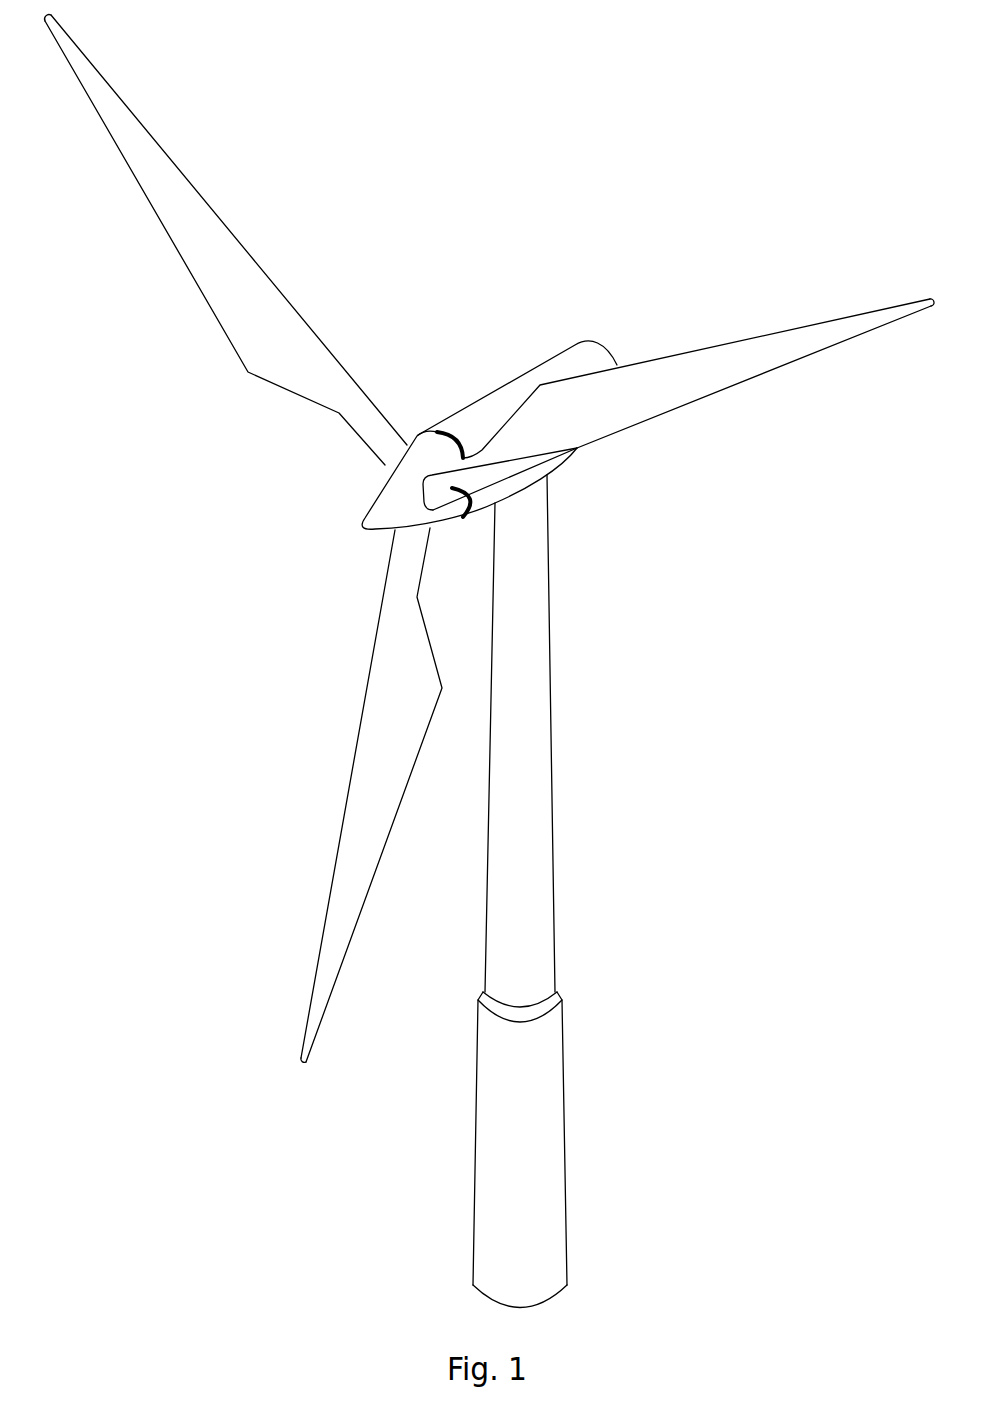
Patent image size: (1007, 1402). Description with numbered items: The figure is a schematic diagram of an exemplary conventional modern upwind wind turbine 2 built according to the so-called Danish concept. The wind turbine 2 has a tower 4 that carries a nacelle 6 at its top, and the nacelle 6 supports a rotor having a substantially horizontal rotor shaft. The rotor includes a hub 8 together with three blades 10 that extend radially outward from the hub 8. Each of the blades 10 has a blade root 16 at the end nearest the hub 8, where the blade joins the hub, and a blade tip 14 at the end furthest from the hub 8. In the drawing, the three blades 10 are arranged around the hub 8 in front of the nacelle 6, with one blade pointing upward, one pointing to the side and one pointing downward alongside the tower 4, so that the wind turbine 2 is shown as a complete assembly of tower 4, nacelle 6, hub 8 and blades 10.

The wind turbine 2 is at (678, 813).
The tower 4 is at (538, 737).
The nacelle 6 is at (483, 410).
The hub 8 is at (380, 503).
The blades 10 is at (260, 342).
The blade tip 14 is at (92, 78).
The blade root 16 is at (390, 453).